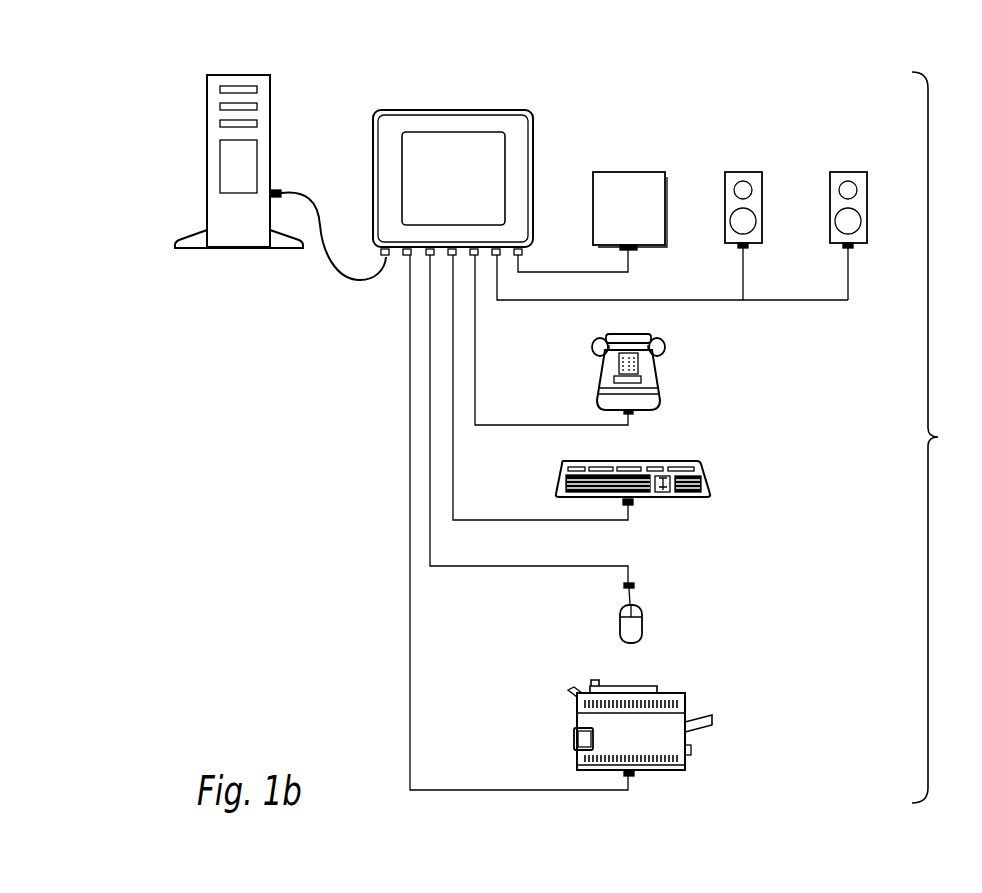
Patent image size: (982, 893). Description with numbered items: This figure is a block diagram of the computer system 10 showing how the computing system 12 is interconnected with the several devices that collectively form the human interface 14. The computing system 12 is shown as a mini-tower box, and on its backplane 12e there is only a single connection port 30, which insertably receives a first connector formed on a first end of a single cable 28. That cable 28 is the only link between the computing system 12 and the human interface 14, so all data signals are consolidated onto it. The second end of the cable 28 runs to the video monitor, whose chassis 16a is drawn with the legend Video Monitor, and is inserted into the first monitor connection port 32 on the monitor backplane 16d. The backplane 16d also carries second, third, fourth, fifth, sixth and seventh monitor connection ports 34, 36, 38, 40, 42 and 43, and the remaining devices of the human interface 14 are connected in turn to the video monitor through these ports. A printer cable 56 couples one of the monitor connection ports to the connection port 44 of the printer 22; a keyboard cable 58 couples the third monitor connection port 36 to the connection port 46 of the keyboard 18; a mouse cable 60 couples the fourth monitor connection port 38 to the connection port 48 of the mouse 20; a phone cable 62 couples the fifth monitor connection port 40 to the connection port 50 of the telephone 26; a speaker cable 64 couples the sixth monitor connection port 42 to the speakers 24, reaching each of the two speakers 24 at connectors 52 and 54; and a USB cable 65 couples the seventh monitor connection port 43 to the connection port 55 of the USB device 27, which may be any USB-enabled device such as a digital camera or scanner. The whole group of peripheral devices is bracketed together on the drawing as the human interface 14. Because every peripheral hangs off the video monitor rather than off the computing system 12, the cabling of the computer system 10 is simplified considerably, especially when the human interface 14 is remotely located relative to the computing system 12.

The computer system 10 is at (802, 83).
The computing system 12 is at (216, 173).
The backplane 12e is at (197, 252).
The human interface 14 is at (940, 437).
The chassis 16a is at (490, 110).
The backplane 16d is at (453, 290).
The keyboard 18 is at (663, 499).
The mouse 20 is at (666, 605).
The printer 22 is at (644, 731).
The speakers 24 is at (813, 216).
The telephone 26 is at (661, 385).
The USB device 27 is at (631, 172).
The cable 28 is at (298, 192).
The connection port 30 is at (281, 190).
The first monitor connection port 32 is at (388, 258).
The second monitor connection port 34 is at (408, 257).
The third monitor connection port 36 is at (430, 257).
The fourth monitor connection port 38 is at (475, 257).
The fifth monitor connection port 40 is at (453, 257).
The sixth monitor connection port 42 is at (497, 257).
The seventh monitor connection port 43 is at (523, 253).
The connection port 44 is at (636, 776).
The connection port 46 is at (636, 507).
The connection port 48 is at (634, 585).
The connection port 50 is at (634, 414).
The speaker connector 52 is at (746, 250).
The speaker connector 54 is at (851, 250).
The connection port 55 is at (639, 250).
The printer cable 56 is at (518, 789).
The keyboard cable 58 is at (518, 520).
The mouse cable 60 is at (518, 567).
The phone cable 62 is at (518, 426).
The speaker cable 64 is at (790, 301).
The USB cable 65 is at (620, 273).